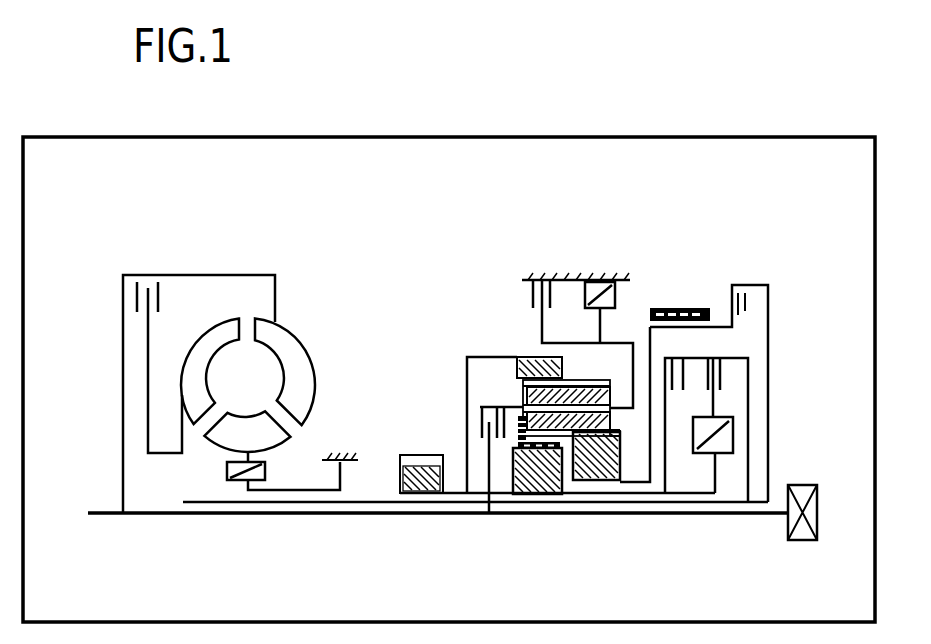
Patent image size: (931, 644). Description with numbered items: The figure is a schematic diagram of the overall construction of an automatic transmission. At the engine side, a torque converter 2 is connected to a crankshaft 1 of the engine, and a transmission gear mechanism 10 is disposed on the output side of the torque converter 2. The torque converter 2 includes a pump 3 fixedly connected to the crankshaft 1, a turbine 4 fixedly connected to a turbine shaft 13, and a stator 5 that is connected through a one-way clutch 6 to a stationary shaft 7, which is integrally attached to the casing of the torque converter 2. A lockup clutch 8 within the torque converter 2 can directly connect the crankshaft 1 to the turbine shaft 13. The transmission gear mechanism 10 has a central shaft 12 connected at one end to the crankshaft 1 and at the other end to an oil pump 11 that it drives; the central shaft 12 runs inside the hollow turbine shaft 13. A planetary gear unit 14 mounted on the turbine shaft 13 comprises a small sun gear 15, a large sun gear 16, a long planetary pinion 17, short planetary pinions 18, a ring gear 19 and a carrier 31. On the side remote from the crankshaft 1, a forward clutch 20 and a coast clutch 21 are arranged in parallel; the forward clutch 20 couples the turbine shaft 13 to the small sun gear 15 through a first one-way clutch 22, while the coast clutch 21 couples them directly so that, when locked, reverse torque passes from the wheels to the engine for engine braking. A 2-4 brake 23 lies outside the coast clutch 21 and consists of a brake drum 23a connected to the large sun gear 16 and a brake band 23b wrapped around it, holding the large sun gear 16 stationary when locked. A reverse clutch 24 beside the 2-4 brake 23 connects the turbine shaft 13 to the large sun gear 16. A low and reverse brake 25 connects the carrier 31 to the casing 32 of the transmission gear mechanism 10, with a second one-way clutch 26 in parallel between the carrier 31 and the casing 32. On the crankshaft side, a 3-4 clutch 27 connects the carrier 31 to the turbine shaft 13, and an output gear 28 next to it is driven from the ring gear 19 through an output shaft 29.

The crankshaft 1 is at (110, 514).
The torque converter 2 is at (320, 333).
The pump 3 is at (287, 336).
The turbine 4 is at (210, 330).
The stator 5 is at (273, 437).
The one-way clutch 6 is at (265, 470).
The stationary shaft 7 is at (322, 492).
The lockup clutch 8 is at (137, 297).
The transmission gear mechanism 10 is at (680, 262).
The oil pump 11 is at (798, 542).
The central shaft 12 is at (489, 513).
The turbine shaft 13 is at (586, 495).
The planetary gear unit 14 is at (455, 352).
The small sun gear 15 is at (540, 495).
The large sun gear 16 is at (614, 503).
The long planetary pinion 17 is at (612, 420).
The short planetary pinions 18 is at (518, 440).
The ring gear 19 is at (538, 356).
The forward clutch 20 is at (722, 380).
The coast clutch 21 is at (684, 378).
The first one-way clutch 22 is at (735, 432).
The 2-4 brake 23 is at (742, 254).
The brake drum 23a is at (696, 305).
The brake band 23b is at (690, 306).
The reverse clutch 24 is at (745, 285).
The low and reverse brake 25 is at (557, 292).
The second one-way clutch 26 is at (615, 300).
The 3-4 clutch 27 is at (480, 425).
The output gear 28 is at (424, 502).
The output shaft 29 is at (467, 383).
The carrier 31 is at (632, 365).
The casing 32 is at (578, 275).